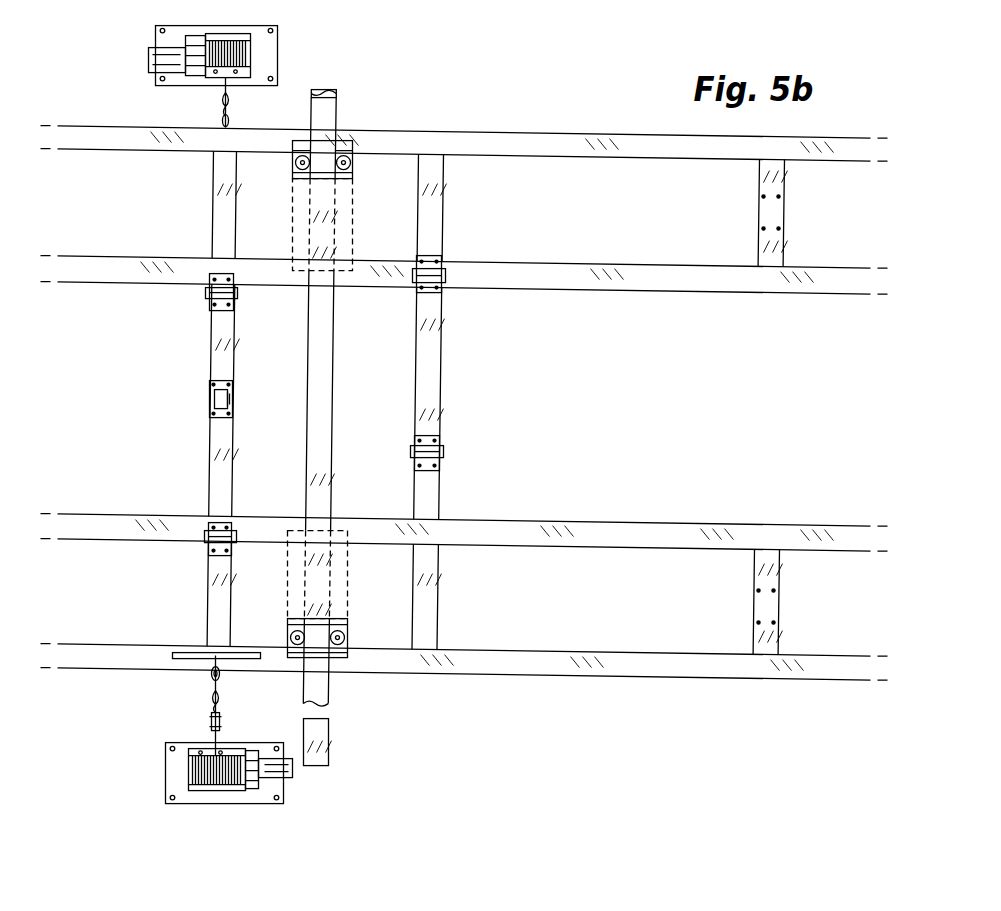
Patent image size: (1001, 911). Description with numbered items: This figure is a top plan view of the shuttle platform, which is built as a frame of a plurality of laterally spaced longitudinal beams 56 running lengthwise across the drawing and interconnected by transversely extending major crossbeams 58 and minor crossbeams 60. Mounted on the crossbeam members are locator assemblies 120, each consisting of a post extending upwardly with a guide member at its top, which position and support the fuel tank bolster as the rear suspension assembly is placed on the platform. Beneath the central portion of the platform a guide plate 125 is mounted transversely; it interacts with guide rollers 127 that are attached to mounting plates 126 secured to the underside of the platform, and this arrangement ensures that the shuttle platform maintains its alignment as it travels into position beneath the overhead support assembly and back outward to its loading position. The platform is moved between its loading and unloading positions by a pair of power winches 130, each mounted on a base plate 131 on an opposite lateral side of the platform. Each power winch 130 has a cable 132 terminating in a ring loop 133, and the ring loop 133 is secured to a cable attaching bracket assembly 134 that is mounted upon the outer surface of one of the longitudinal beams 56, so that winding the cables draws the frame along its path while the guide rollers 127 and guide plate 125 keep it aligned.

The longitudinal beams 56 is at (538, 133).
The major crossbeams 58 is at (210, 445).
The minor crossbeams 60 is at (212, 210).
The locator assemblies 120 is at (196, 300).
The guide plate 125 is at (328, 745).
The mounting plates 126 is at (352, 199).
The guide rollers 127 is at (370, 698).
The power winches 130 is at (248, 413).
The base plates 131 is at (262, 56).
The cable 132 is at (235, 40).
The ring loop 133 is at (218, 95).
The cable attaching bracket assembly 134 is at (213, 112).